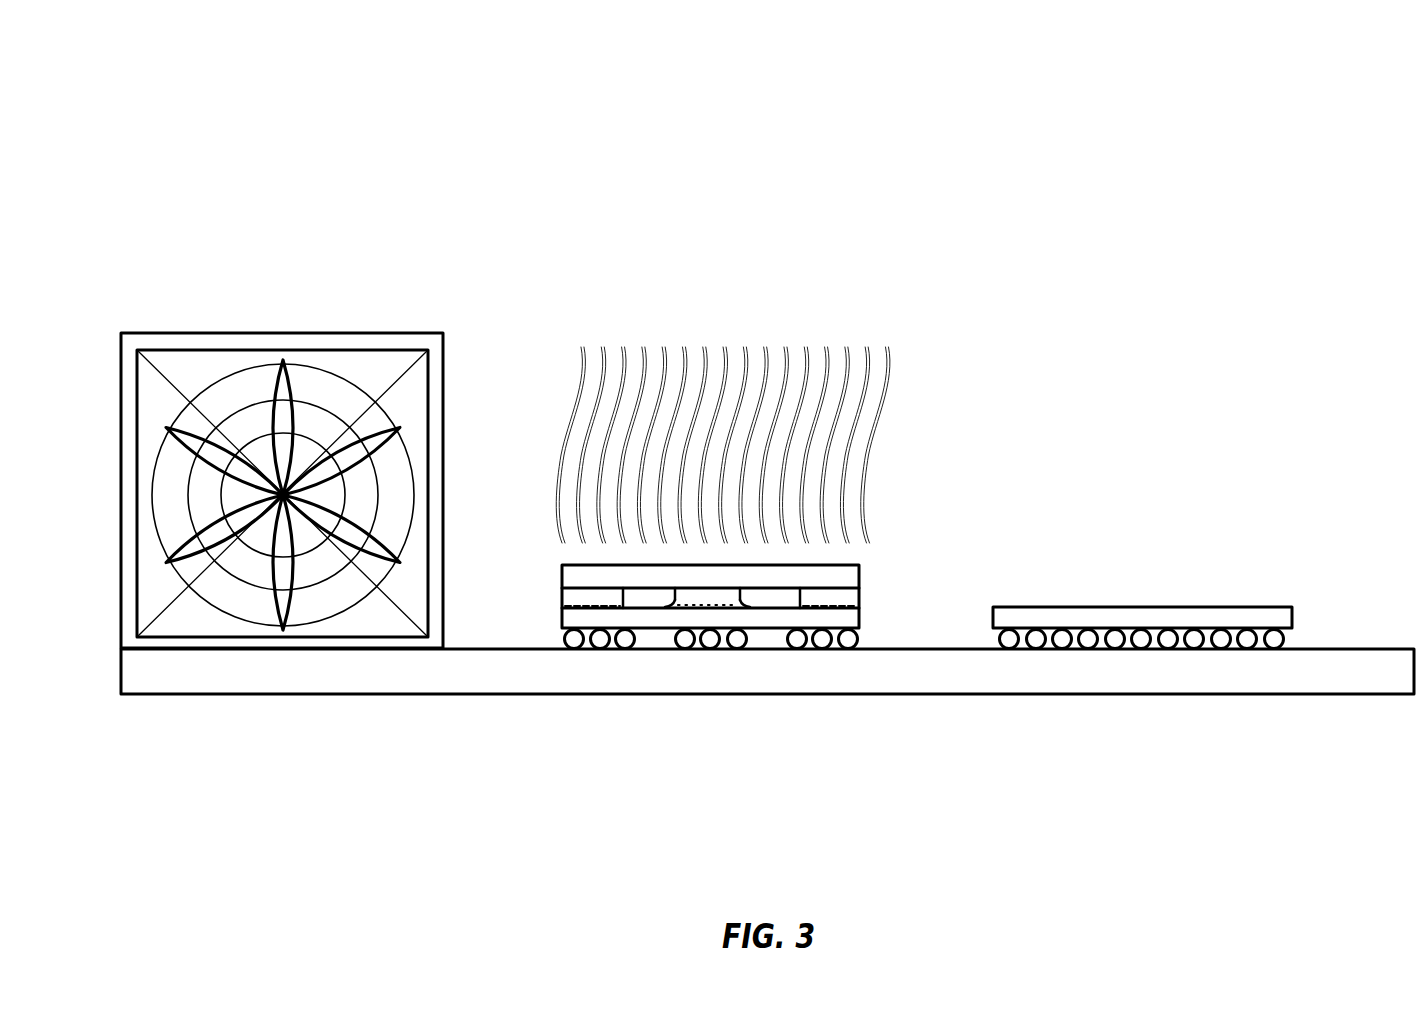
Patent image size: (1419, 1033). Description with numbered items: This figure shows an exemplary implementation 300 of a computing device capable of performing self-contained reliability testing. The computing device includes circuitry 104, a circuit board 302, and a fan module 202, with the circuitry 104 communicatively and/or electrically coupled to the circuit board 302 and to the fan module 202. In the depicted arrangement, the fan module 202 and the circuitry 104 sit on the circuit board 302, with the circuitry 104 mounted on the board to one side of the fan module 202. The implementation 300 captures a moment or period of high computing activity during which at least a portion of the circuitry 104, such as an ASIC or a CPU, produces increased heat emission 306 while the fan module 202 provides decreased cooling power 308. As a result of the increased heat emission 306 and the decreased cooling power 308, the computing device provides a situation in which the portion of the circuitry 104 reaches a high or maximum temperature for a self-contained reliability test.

The implementation 300 is at (192, 128).
The fan module 202 is at (432, 333).
The decreased cooling power 308 is at (403, 400).
The increased heat emission 306 is at (842, 323).
The circuitry 104 is at (860, 607).
The circuit board 302 is at (338, 694).